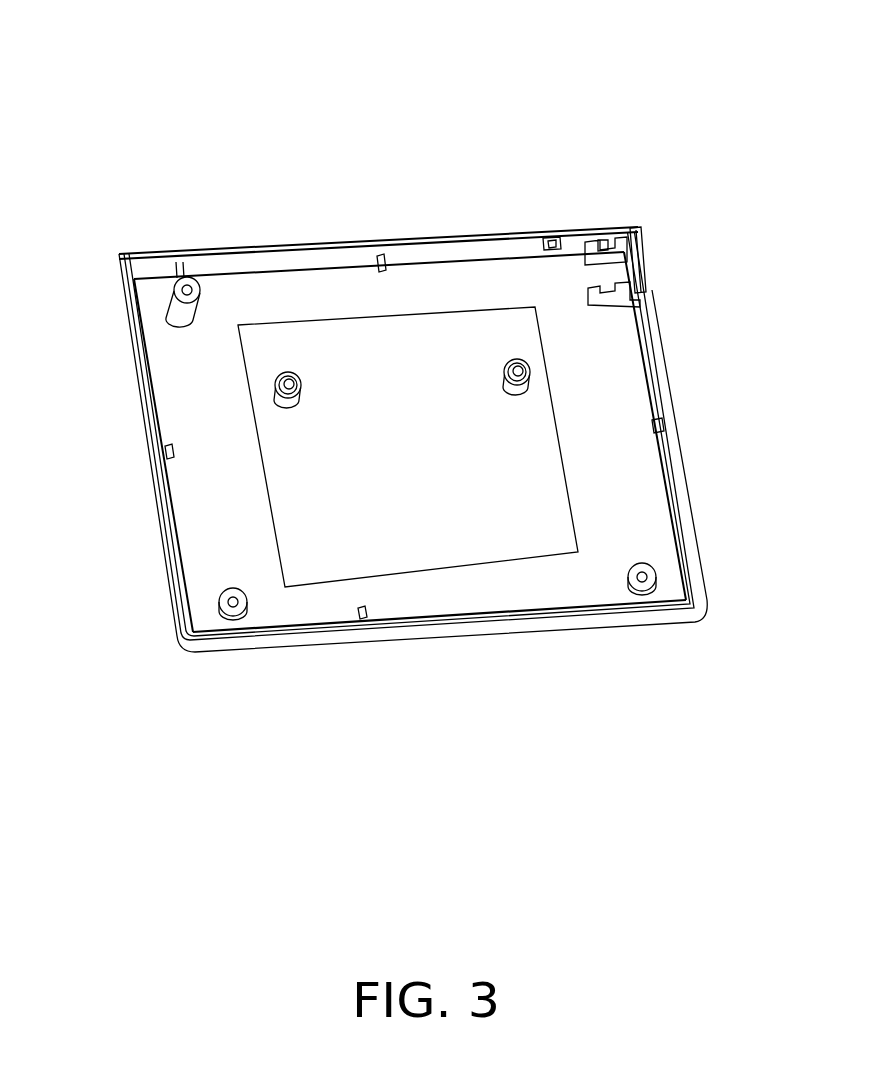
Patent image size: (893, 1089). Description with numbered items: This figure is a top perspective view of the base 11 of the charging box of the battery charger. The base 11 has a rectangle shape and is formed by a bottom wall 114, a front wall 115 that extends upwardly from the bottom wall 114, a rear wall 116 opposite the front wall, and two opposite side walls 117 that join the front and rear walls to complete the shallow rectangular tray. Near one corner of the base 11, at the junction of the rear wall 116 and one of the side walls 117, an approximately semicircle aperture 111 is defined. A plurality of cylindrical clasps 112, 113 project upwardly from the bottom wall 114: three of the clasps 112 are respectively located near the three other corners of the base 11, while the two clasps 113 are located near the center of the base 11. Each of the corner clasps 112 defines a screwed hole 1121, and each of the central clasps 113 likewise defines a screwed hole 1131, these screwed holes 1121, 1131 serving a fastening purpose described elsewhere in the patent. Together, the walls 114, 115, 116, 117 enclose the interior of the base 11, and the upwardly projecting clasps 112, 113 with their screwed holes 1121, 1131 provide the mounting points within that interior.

The base 11 is at (521, 57).
The aperture 111 is at (643, 271).
The cylindrical clasps 112 is at (172, 307).
The screwed hole 1121 is at (187, 282).
The cylindrical clasps 113 is at (300, 403).
The screwed hole 1131 is at (532, 362).
The bottom wall 114 is at (617, 455).
The front wall 115 is at (432, 640).
The rear wall 116 is at (296, 263).
The side walls 117 is at (157, 482).